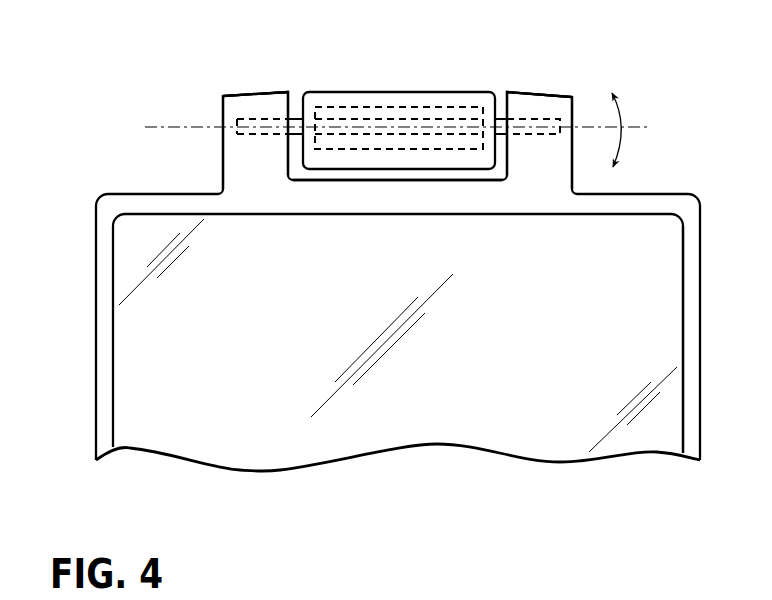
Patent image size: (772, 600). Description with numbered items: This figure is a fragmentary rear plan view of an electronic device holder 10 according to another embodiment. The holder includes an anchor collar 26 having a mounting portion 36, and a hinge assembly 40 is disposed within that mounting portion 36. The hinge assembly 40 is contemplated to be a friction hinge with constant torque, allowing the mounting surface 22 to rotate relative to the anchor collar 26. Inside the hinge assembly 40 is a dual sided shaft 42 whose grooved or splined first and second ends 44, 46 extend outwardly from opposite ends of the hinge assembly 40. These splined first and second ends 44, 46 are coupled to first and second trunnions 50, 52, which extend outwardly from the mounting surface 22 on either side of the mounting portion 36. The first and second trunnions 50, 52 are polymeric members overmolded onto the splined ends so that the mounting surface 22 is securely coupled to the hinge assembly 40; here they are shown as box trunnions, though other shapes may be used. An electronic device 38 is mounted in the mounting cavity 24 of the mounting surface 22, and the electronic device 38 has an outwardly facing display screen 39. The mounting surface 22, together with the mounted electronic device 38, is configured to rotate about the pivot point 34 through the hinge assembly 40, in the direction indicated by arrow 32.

The electronic device holder 10 is at (640, 92).
The mounting surface 22 is at (83, 340).
The mounting cavity 24 is at (113, 270).
The anchor collar 26 is at (322, 87).
The arrow 32 is at (624, 135).
The pivot point 34 is at (398, 127).
The mounting portion 36 is at (363, 92).
The electronic device 38 is at (683, 325).
The display screen 39 is at (497, 348).
The hinge assembly 40 is at (447, 107).
The dual sided shaft 42 is at (410, 119).
The first end 44 is at (253, 119).
The second end 46 is at (555, 119).
The first trunnion 50 is at (272, 90).
The second trunnion 52 is at (527, 92).